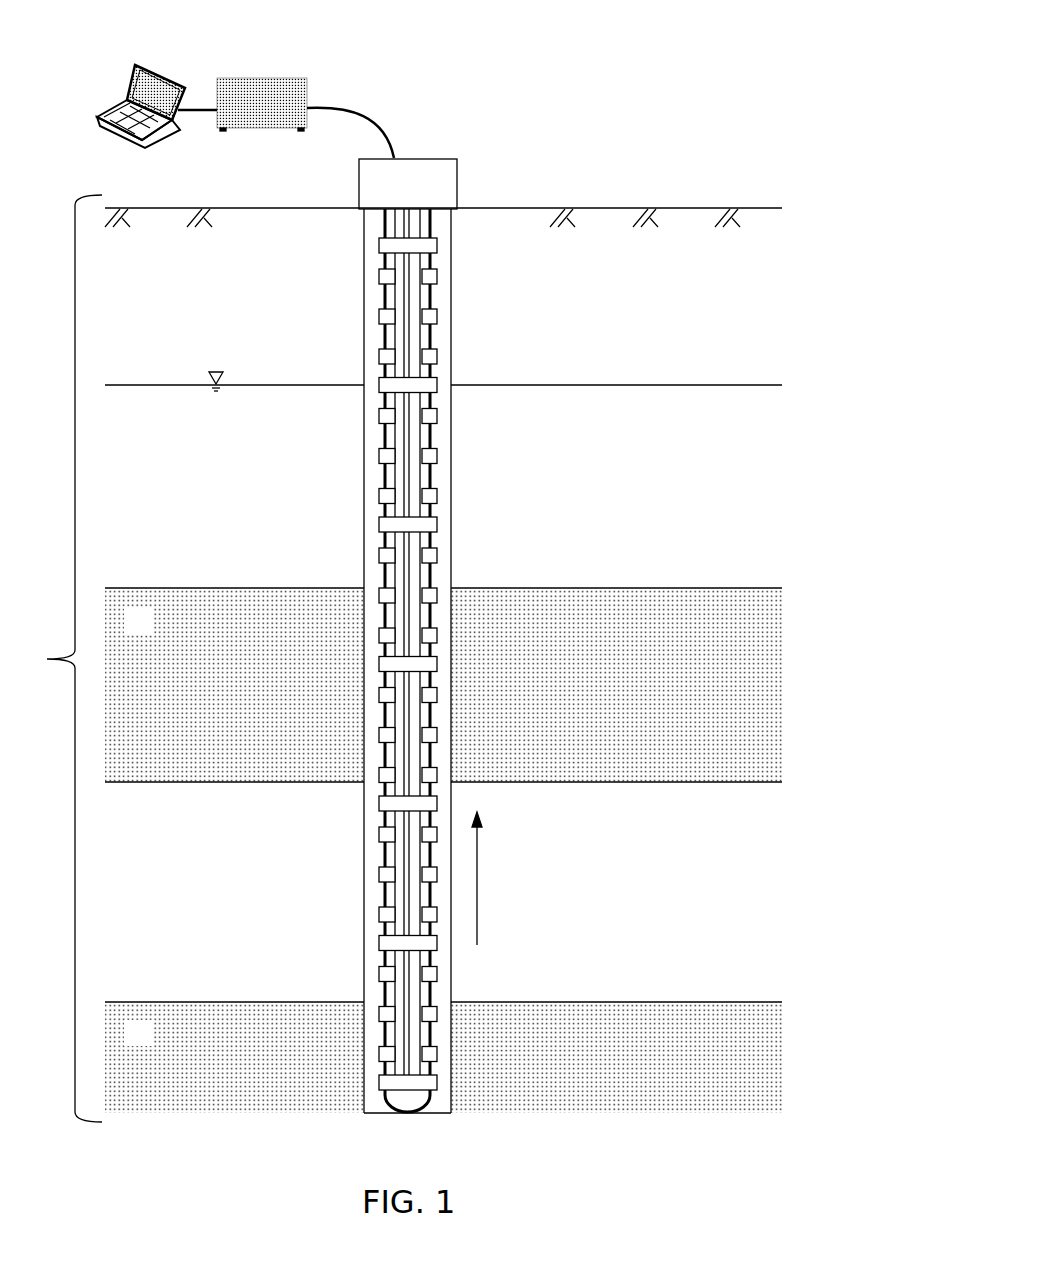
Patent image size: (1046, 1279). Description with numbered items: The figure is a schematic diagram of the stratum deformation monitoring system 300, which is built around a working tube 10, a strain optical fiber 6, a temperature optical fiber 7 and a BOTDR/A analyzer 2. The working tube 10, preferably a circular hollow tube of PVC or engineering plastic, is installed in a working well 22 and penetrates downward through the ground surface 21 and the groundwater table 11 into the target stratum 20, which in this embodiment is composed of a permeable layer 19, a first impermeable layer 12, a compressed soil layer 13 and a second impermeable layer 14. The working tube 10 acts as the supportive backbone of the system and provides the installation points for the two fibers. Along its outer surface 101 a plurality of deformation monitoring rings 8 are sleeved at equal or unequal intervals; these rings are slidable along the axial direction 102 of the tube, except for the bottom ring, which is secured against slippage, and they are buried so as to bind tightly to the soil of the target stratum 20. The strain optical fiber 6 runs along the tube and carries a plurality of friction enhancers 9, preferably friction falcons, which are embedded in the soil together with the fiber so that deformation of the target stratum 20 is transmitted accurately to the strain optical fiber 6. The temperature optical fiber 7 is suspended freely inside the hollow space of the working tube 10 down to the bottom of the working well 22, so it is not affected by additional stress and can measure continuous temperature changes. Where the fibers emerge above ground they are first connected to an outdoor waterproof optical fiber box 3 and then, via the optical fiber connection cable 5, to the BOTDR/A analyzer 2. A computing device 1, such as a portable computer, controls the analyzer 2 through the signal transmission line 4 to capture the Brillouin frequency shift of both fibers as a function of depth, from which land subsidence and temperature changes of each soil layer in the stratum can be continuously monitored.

The computing device 1 is at (132, 78).
The BOTDR/A analyzer 2 is at (272, 78).
The outdoor waterproof optical fiber box 3 is at (440, 159).
The signal transmission line 4 is at (200, 112).
The optical fiber connection cable 5 is at (343, 110).
The strain optical fiber 6 is at (385, 222).
The temperature optical fiber 7 is at (407, 300).
The deformation monitoring ring 8 is at (437, 383).
The friction enhancer 9 is at (437, 458).
The working tube 10 is at (418, 622).
The outer surface 101 is at (418, 540).
The axial direction 102 is at (481, 893).
The groundwater table 11 is at (143, 385).
The first impermeable layer 12 is at (443, 685).
The compressed soil layer 13 is at (143, 818).
The second impermeable layer 14 is at (443, 1057).
The permeable layer 19 is at (140, 390).
The target stratum 20 is at (54, 658).
The ground surface 21 is at (502, 208).
The working well 22 is at (364, 450).
The stratum deformation monitoring system 300 is at (674, 917).